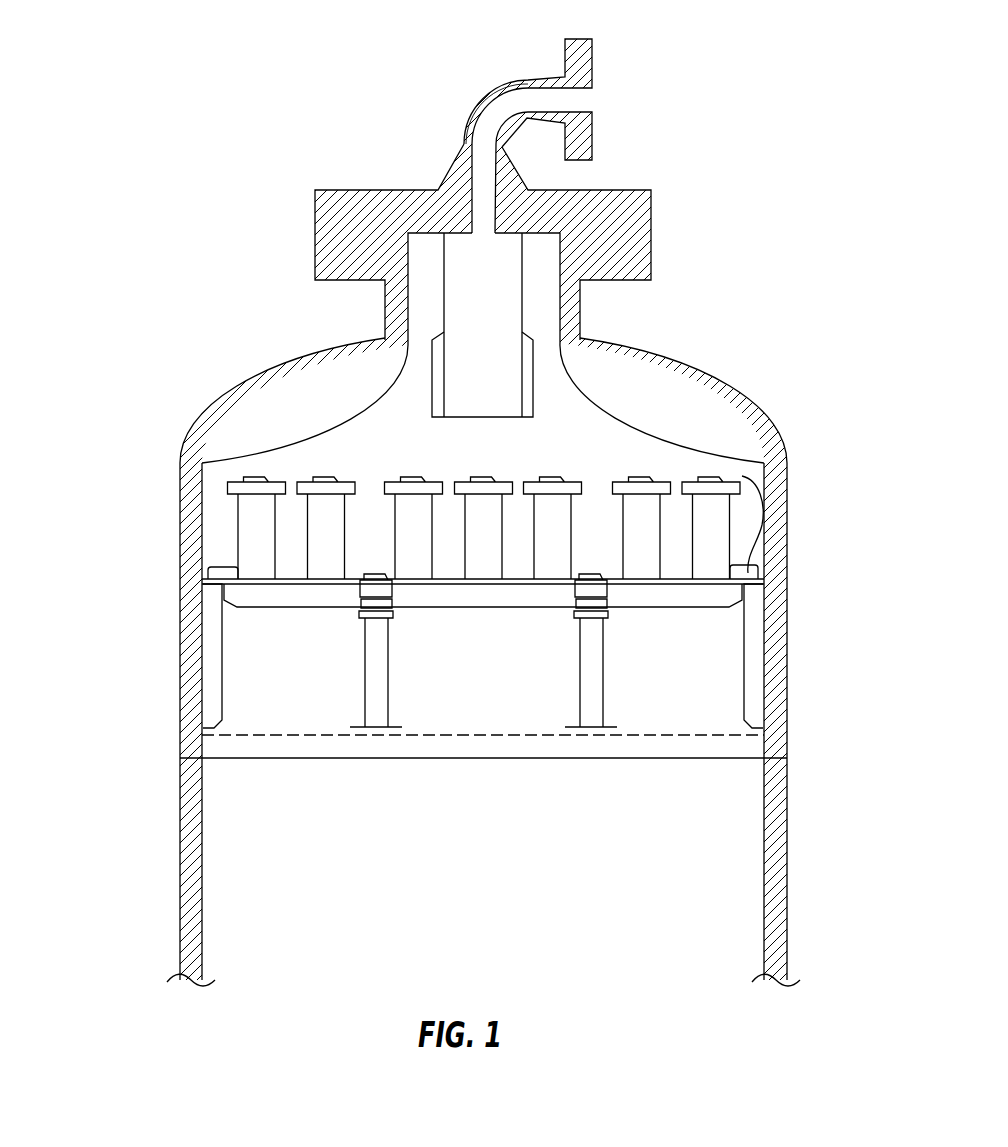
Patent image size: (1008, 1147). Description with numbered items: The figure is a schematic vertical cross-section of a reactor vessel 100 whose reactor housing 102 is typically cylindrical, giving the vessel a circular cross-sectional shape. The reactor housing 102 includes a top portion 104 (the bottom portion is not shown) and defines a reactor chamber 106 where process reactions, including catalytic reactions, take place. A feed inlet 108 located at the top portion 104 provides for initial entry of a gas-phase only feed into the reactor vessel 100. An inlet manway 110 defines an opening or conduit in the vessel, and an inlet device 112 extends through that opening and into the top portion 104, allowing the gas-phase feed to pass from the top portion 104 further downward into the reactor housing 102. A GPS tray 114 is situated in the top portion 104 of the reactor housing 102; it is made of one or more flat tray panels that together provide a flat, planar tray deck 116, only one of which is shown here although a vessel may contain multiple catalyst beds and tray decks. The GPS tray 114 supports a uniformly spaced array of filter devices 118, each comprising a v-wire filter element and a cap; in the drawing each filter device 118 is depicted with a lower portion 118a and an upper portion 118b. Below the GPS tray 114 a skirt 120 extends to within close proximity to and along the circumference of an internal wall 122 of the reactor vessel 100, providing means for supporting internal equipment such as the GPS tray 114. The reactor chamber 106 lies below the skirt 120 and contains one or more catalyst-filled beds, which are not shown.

The reactor vessel 100 is at (168, 86).
The reactor housing 102 is at (797, 756).
The top portion 104 is at (633, 336).
The reactor chamber 106 is at (202, 876).
The feed inlet 108 is at (605, 99).
The inlet manway 110 is at (420, 268).
The inlet device 112 is at (465, 358).
The GPS tray 114 is at (762, 528).
The tray deck 116 is at (210, 573).
The filter device 118 is at (95, 437).
The bolt shaft 118a is at (240, 523).
The bolt head 118b is at (226, 487).
The skirt 120 is at (212, 630).
The internal wall 122 is at (777, 650).